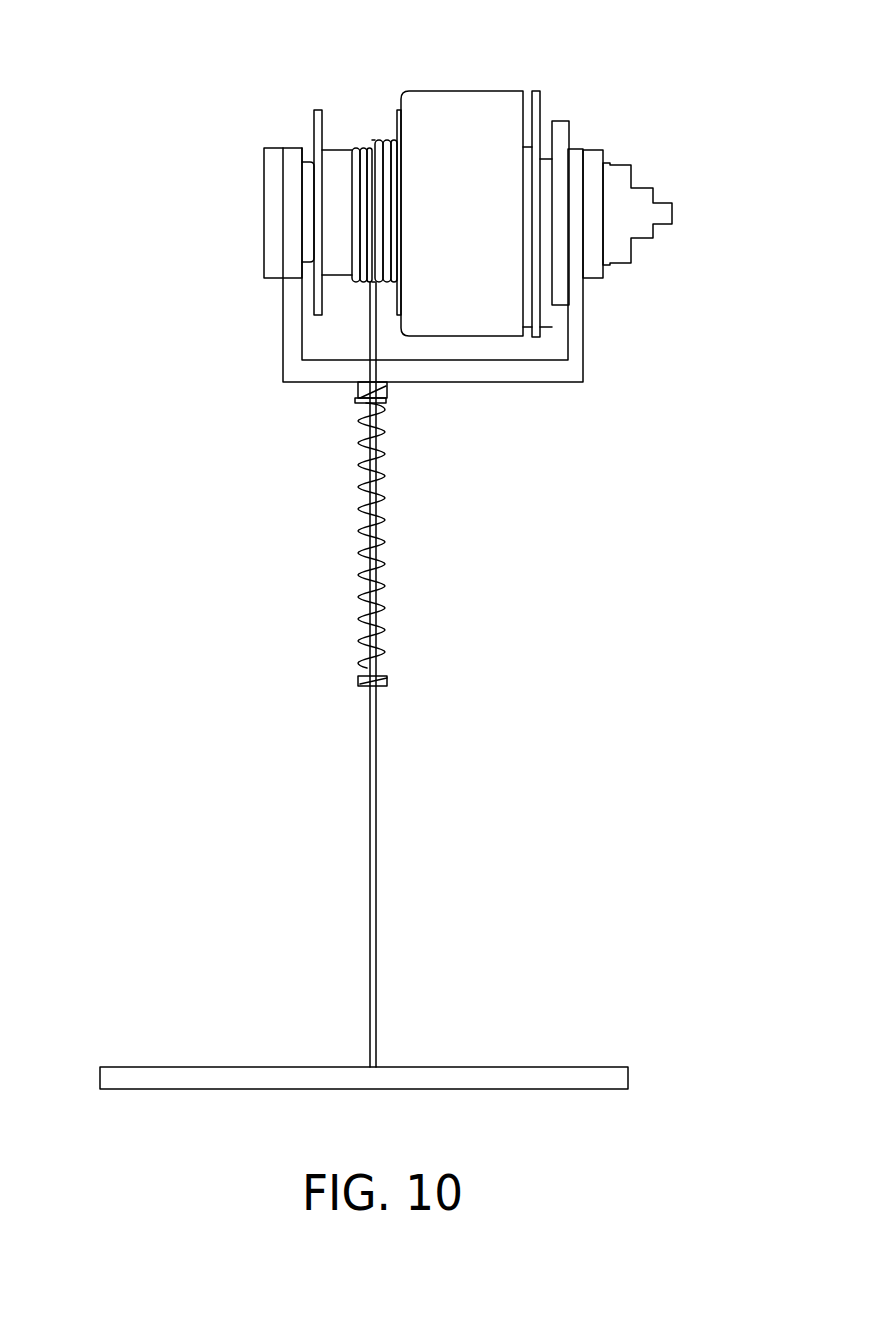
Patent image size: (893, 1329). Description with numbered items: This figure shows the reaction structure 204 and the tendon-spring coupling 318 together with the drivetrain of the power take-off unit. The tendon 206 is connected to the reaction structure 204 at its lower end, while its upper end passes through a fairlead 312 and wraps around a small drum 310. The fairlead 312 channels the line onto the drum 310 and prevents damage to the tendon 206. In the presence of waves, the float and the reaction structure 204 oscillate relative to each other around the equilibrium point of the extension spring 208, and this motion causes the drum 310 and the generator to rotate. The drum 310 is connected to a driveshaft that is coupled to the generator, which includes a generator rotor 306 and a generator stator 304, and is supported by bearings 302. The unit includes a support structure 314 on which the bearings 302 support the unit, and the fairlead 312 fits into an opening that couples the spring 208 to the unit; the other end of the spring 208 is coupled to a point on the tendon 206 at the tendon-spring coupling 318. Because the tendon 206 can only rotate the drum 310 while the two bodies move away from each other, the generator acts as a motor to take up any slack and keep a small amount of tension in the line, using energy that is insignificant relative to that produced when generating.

The reaction structure 204 is at (628, 1070).
The tendon 206 is at (373, 328).
The extension spring 208 is at (360, 485).
The bearings 302 is at (273, 163).
The generator stator 304 is at (535, 97).
The generator rotor 306 is at (472, 107).
The drum 310 is at (337, 237).
The fairlead 312 is at (387, 398).
The support structure 314 is at (573, 350).
The tendon-spring coupling 318 is at (385, 677).